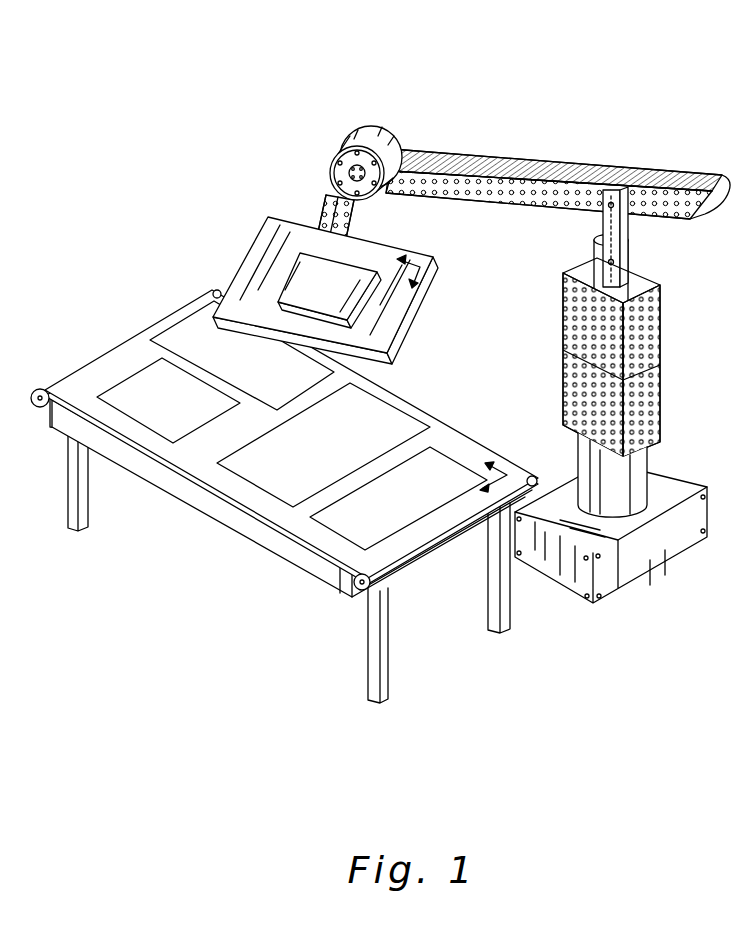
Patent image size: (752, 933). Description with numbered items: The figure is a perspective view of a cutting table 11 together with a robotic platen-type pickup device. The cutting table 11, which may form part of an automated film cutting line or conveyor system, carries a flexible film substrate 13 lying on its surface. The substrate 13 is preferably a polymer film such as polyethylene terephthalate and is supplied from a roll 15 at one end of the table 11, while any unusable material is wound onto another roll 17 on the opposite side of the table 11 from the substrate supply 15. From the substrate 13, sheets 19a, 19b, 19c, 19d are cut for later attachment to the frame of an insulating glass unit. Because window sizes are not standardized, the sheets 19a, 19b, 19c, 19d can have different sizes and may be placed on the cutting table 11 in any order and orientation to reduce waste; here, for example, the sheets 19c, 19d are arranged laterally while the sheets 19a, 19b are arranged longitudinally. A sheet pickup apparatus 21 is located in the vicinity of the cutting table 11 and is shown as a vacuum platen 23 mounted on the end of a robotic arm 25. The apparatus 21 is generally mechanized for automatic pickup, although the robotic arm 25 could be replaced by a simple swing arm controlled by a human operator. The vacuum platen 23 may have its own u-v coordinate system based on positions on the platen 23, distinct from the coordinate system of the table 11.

The cutting table 11 is at (395, 395).
The flexible film substrate 13 is at (468, 452).
The roll 15 is at (537, 481).
The roll 17 is at (42, 407).
The sheet 19a is at (153, 415).
The sheet 19b is at (260, 390).
The sheet 19c is at (306, 455).
The sheet 19d is at (395, 500).
The sheet pickup apparatus 21 is at (518, 313).
The vacuum platen 23 is at (263, 303).
The robotic arm 25 is at (495, 210).